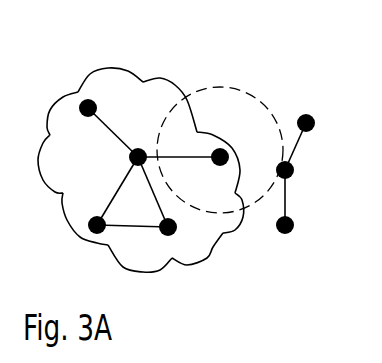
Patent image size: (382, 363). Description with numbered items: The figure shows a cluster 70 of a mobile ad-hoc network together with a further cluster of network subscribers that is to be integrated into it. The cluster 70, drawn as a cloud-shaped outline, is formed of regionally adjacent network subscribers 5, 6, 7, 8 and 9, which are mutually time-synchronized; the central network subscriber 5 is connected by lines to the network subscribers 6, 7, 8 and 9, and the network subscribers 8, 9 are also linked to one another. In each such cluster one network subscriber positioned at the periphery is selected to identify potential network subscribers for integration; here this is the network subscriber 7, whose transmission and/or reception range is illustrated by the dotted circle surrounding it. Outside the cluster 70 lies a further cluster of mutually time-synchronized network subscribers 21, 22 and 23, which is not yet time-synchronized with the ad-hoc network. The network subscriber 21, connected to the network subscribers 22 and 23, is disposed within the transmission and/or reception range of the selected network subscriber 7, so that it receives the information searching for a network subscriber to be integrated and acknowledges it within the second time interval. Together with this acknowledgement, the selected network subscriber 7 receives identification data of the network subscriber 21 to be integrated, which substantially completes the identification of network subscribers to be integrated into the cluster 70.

The cluster 70 is at (158, 76).
The network subscriber 5 is at (138, 144).
The network subscriber 6 is at (91, 95).
The selected network subscriber 7 is at (217, 169).
The network subscriber 8 is at (96, 212).
The network subscriber 9 is at (176, 230).
The network subscriber 21 is at (297, 170).
The network subscriber 22 is at (317, 116).
The network subscriber 23 is at (295, 234).